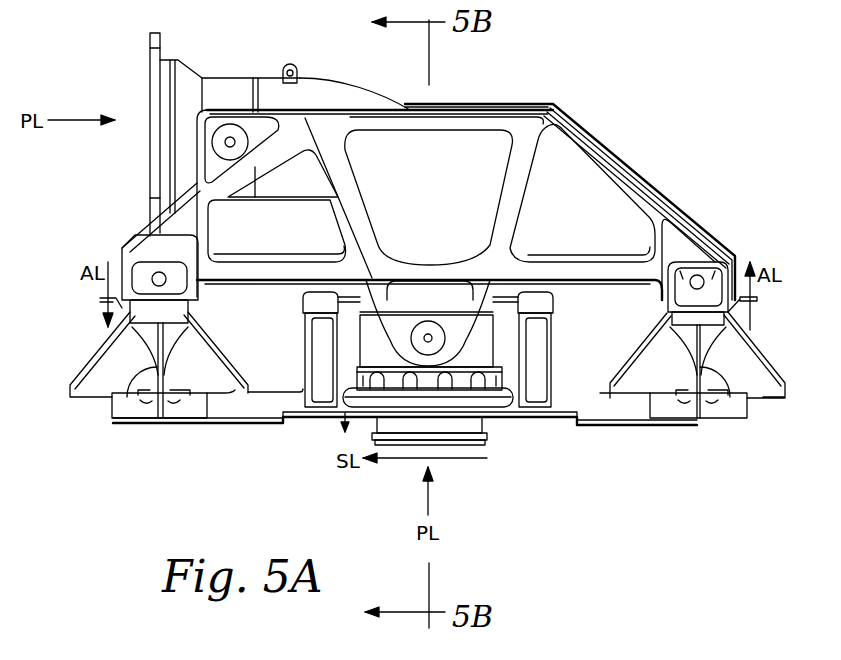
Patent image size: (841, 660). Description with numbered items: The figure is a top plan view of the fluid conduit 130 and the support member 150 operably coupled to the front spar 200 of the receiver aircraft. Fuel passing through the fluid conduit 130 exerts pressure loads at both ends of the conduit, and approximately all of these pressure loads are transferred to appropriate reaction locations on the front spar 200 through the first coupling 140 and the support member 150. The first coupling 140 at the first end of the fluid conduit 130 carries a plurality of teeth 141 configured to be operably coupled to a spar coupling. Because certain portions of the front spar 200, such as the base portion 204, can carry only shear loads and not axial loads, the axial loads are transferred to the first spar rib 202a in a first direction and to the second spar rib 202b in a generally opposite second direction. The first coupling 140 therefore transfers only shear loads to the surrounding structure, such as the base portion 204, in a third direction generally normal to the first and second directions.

The fluid conduit 130 is at (425, 157).
The support member 150 is at (572, 113).
The first coupling 140 is at (487, 348).
The teeth 141 is at (430, 383).
The front spar 200 is at (85, 353).
The first spar rib 202a is at (132, 372).
The second spar rib 202b is at (700, 363).
The base portion 204 is at (263, 405).